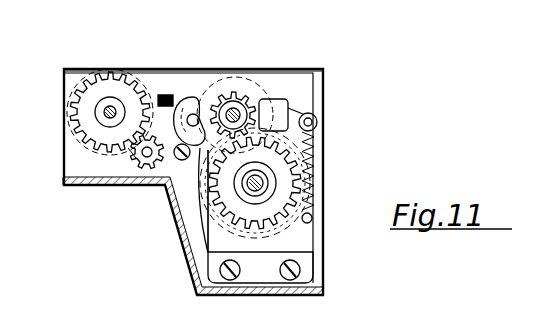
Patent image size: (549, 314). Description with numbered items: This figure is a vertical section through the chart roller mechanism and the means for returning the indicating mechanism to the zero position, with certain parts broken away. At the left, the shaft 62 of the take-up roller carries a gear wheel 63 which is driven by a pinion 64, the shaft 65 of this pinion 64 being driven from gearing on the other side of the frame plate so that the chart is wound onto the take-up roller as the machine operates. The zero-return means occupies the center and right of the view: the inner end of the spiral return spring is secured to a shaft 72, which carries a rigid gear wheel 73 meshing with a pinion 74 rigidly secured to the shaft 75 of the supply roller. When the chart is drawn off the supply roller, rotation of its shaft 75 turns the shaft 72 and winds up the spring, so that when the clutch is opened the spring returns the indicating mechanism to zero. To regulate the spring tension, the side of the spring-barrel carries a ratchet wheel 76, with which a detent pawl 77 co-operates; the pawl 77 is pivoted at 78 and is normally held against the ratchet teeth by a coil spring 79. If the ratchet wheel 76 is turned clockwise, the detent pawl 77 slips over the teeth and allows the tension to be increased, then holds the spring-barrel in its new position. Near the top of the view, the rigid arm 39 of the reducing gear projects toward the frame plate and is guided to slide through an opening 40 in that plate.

The rigid arm 39 is at (160, 100).
The opening 40 is at (166, 95).
The shaft 62 is at (100, 118).
The gear wheel 63 is at (88, 102).
The pinion 64 is at (128, 153).
The shaft 65 is at (146, 157).
The shaft 72 is at (268, 190).
The gear wheel 73 is at (292, 177).
The pinion 74 is at (244, 93).
The shaft 75 is at (270, 107).
The ratchet wheel 76 is at (200, 200).
The detent pawl 77 is at (305, 116).
The pivot 78 is at (193, 113).
The coil spring 79 is at (305, 163).